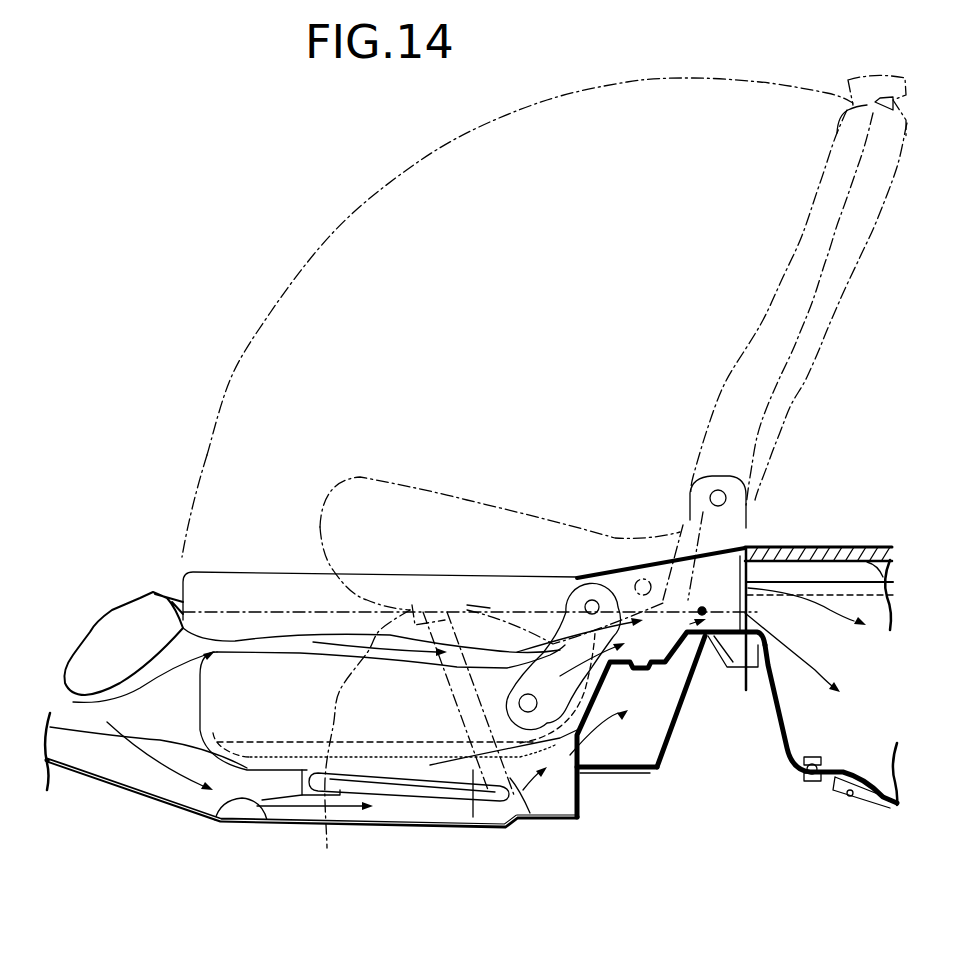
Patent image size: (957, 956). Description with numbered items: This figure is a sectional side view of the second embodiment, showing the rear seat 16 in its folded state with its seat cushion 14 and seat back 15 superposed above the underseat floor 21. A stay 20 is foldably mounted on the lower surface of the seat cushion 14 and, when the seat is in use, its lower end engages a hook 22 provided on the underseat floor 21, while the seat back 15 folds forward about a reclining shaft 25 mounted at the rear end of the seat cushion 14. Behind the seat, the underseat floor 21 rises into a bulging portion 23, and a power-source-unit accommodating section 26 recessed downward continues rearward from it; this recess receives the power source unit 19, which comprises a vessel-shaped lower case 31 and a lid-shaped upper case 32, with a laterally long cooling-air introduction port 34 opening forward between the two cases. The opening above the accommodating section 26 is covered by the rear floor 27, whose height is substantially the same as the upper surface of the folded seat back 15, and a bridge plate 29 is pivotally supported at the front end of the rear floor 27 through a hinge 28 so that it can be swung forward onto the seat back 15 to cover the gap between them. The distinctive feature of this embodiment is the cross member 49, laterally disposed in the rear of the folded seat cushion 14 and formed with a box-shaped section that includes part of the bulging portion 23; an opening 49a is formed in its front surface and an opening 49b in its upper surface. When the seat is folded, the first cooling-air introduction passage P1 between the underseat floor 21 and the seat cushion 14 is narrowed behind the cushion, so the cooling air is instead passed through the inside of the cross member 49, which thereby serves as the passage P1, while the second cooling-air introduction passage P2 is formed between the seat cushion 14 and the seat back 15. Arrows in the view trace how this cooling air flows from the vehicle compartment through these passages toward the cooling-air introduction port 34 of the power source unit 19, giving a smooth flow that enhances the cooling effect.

The seat cushion 14 is at (330, 673).
The seat back 15 is at (230, 583).
The rear seat 16 is at (312, 480).
The power source unit 19 is at (847, 783).
The stay 20 is at (380, 780).
The underseat floor 21 is at (207, 813).
The hook 22 is at (533, 808).
The bulging portion 23 is at (667, 650).
The reclining shaft 25 is at (560, 603).
The power-source-unit accommodating section 26 is at (858, 800).
The rear floor 27 is at (860, 547).
The hinge 28 is at (747, 547).
The bridge plate 29 is at (620, 568).
The lower case 31 is at (795, 728).
The upper case 32 is at (890, 582).
The cooling-air introduction port 34 is at (745, 677).
The cross member 49 is at (645, 773).
The opening 49a is at (600, 767).
The opening 49b is at (690, 670).
The first cooling-air introduction passage P1 is at (400, 807).
The second cooling-air introduction passage P2 is at (373, 637).